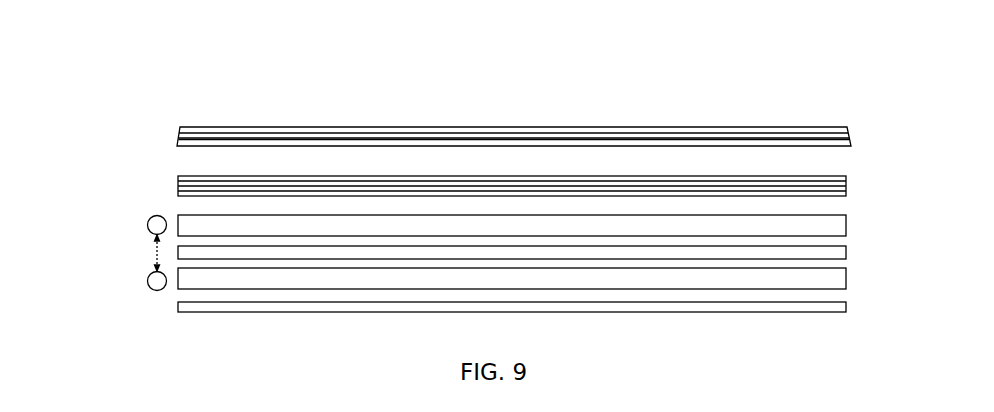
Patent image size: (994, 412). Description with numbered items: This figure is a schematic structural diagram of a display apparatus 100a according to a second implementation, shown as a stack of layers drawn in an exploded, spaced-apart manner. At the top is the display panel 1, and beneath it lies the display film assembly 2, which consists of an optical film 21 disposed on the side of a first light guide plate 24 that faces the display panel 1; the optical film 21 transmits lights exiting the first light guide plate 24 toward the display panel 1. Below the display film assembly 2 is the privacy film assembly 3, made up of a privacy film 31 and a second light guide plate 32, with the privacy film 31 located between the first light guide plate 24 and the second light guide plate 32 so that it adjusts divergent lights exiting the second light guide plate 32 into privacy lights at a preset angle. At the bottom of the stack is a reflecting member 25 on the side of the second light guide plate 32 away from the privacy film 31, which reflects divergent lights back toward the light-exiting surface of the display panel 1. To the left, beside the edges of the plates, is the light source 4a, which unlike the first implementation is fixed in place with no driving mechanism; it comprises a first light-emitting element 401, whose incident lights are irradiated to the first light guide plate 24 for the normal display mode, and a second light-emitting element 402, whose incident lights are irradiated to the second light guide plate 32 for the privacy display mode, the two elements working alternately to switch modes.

The display apparatus 100a is at (287, 99).
The display panel 1 is at (850, 138).
The display film assembly 2 is at (910, 177).
The optical film 21 is at (846, 187).
The first light guide plate 24 is at (846, 226).
The privacy film assembly 3 is at (916, 245).
The privacy film 31 is at (846, 253).
The second light guide plate 32 is at (846, 280).
The reflecting member 25 is at (846, 308).
The light source 4a is at (70, 220).
The first light-emitting element 401 is at (147, 224).
The second light-emitting element 402 is at (147, 283).